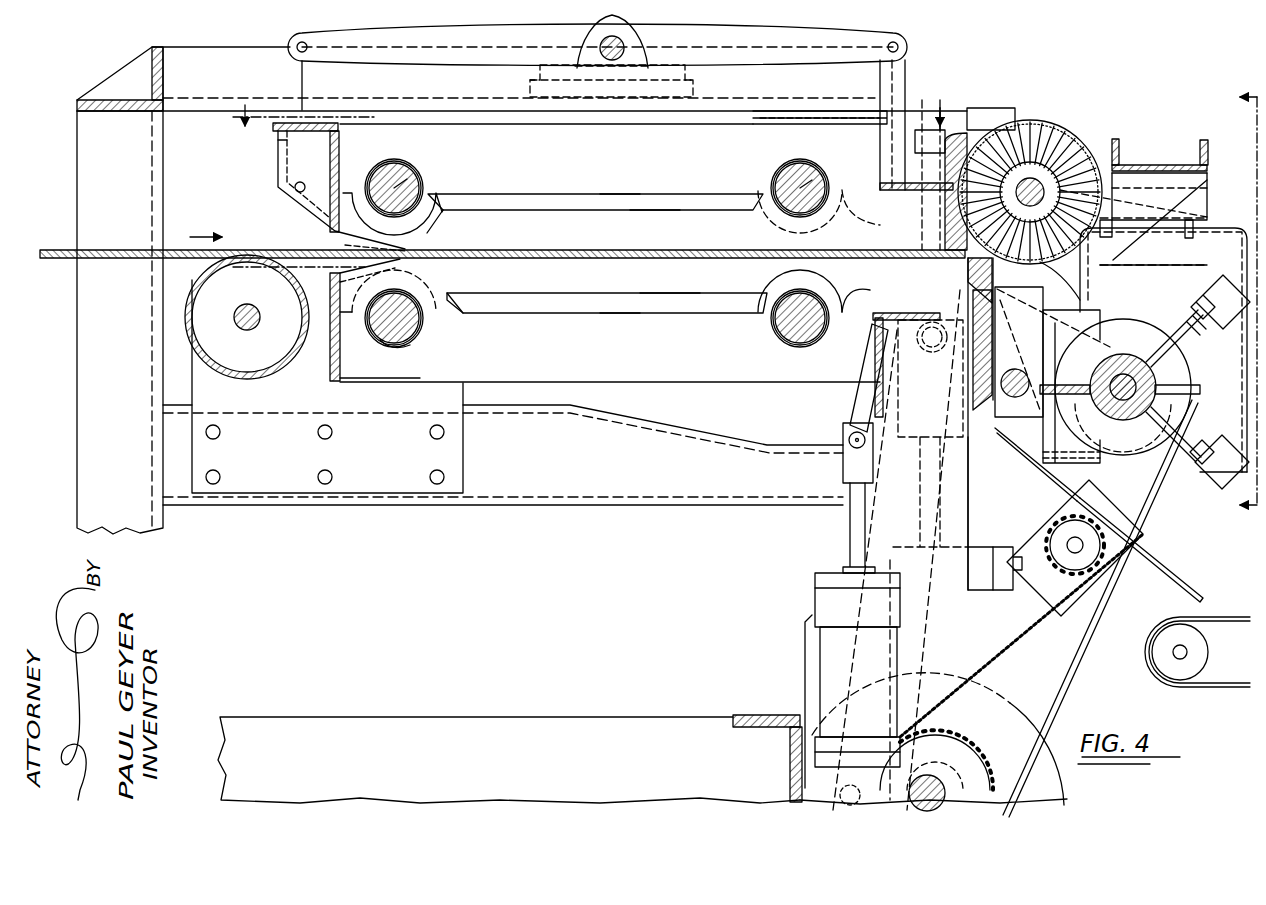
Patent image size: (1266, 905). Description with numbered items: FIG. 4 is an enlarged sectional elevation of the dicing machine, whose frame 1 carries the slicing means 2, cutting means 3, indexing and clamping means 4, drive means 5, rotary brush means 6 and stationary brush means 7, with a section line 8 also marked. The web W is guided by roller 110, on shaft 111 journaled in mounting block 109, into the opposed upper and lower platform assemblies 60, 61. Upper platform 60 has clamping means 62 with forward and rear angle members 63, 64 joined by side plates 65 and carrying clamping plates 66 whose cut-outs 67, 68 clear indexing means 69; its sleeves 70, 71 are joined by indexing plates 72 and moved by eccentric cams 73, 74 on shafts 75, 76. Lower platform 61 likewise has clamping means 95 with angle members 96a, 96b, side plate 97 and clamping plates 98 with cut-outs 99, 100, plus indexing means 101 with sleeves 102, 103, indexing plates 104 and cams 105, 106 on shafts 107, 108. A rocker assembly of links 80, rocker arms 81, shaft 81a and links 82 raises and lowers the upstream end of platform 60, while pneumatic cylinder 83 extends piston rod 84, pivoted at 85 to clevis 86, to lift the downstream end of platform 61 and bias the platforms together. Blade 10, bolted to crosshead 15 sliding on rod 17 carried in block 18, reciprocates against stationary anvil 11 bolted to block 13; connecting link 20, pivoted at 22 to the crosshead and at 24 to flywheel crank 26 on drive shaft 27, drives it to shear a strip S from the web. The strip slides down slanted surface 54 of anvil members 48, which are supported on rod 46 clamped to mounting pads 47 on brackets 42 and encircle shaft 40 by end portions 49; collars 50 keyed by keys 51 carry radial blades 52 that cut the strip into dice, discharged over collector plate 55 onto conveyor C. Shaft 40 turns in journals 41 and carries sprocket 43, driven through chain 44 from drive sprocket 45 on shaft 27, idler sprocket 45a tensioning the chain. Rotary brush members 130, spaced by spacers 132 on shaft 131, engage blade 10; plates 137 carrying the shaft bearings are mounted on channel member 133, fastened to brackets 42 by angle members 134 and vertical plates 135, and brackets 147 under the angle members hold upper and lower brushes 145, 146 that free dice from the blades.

The frame 1 is at (74, 409).
The slicing means 2 is at (980, 266).
The cutting means 3 is at (1172, 503).
The indexing and clamping means 4 is at (253, 178).
The drive means 5 is at (586, 173).
The rotary brush means 6 is at (1080, 106).
The stationary brush means 7 is at (1210, 248).
The section line 8 is at (1234, 301).
The slicing member 10 is at (990, 400).
The stationary anvil 11 is at (962, 140).
The block 13 is at (945, 135).
The crosshead member 15 is at (963, 452).
The rod 17 is at (940, 520).
The blocks 18 is at (950, 590).
The connecting link 20 is at (915, 612).
The upper end pivot 22 is at (925, 352).
The lower pivot 24 is at (792, 778).
The flywheel crank member 26 is at (1043, 735).
The drive shaft 27 is at (942, 788).
The shaft 40 is at (1108, 330).
The journals 41 is at (1112, 320).
The brackets 42 is at (1080, 310).
The sprocket 43 is at (1110, 452).
The chain 44 is at (1072, 642).
The drive sprocket 45 is at (985, 710).
The idler sprocket 45a is at (1052, 588).
The support rod 46 is at (1020, 372).
The mounting pads 47 is at (1032, 466).
The anvil members 48 is at (1040, 303).
The second end portion 49 is at (1098, 410).
The spacing elements 50 is at (1125, 418).
The keys 51 is at (1150, 378).
The blade 52 is at (1190, 385).
The slanted upper surface 54 is at (992, 272).
The collector plate 55 is at (1175, 582).
The upper platform assembly 60 is at (298, 214).
The lower platform assembly 61 is at (320, 258).
The clamping means 62 is at (556, 205).
The forward angle member 63 is at (880, 138).
The rear angle member 64 is at (342, 135).
The side plates 65 is at (472, 128).
The clamping plates 66 is at (510, 215).
The forward cut-out portion 67 is at (850, 200).
The rear cut-out portion 68 is at (440, 200).
The indexing means 69 is at (652, 192).
The forward sleeve 70 is at (810, 162).
The rear sleeve 71 is at (408, 160).
The indexing plates 72 is at (606, 196).
The forward eccentric cam 73 is at (784, 162).
The rear eccentric cam 74 is at (420, 168).
The forward shaft 75 is at (818, 168).
The rear shaft 76 is at (418, 178).
The links 80 is at (310, 77).
The rocker arms 81 is at (432, 40).
The shaft 81a is at (608, 40).
The links 82 is at (879, 74).
The pneumatic power cylinder 83 is at (822, 663).
The piston rod 84 is at (848, 528).
The pivot 85 is at (847, 436).
The clevis 86 is at (850, 402).
The clamping means 95 is at (558, 300).
The forward angle member 96a is at (872, 333).
The rear angle member 96b is at (330, 378).
The side plate 97 is at (693, 383).
The clamping plates 98 is at (518, 295).
The cut-out portion 99 is at (835, 312).
The cut-out portion 100 is at (418, 318).
The indexing means 101 is at (673, 313).
The forward sleeve 102 is at (772, 326).
The rear sleeve 103 is at (400, 350).
The indexing plates 104 is at (610, 315).
The forward eccentric cam 105 is at (785, 343).
The rear eccentric cam 106 is at (380, 350).
The forward shaft 107 is at (782, 290).
The rear shaft 108 is at (412, 338).
The mounting block 109 is at (455, 433).
The guide roller 110 is at (185, 315).
The shaft 111 is at (247, 330).
The brush members 130 is at (1048, 125).
The shaft 131 is at (1060, 170).
The spacers 132 is at (1050, 160).
The channel member 133 is at (1175, 160).
The angle members 134 is at (1188, 186).
The vertical plates 135 is at (1200, 186).
The plates 137 is at (1112, 245).
The upper brush 145 is at (1175, 325).
The lower brush 146 is at (1210, 425).
The brackets 147 is at (1178, 305).
The web W is at (60, 249).
The strip S is at (1085, 380).
The conveyor C is at (1210, 620).